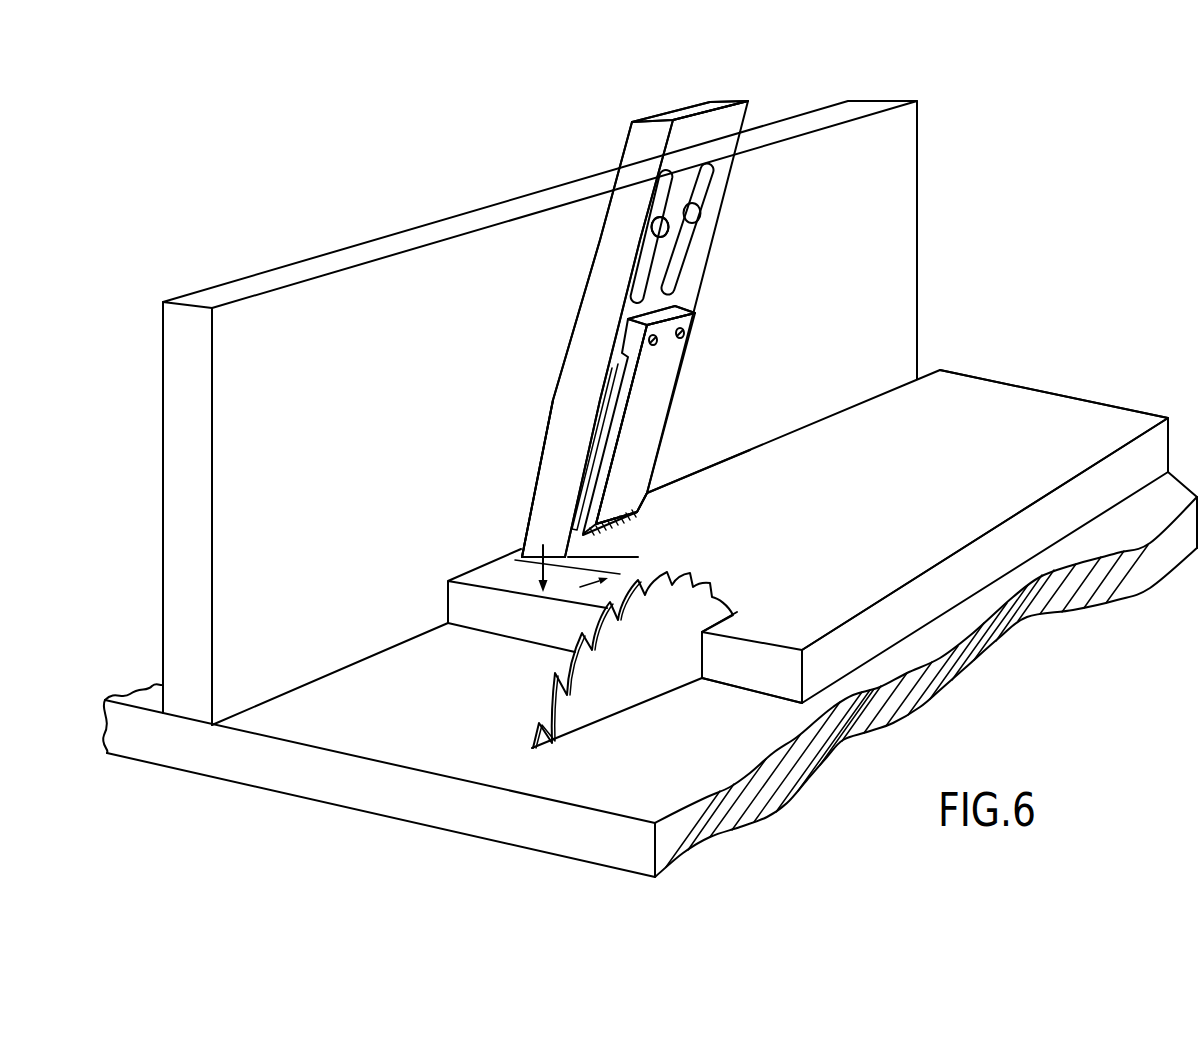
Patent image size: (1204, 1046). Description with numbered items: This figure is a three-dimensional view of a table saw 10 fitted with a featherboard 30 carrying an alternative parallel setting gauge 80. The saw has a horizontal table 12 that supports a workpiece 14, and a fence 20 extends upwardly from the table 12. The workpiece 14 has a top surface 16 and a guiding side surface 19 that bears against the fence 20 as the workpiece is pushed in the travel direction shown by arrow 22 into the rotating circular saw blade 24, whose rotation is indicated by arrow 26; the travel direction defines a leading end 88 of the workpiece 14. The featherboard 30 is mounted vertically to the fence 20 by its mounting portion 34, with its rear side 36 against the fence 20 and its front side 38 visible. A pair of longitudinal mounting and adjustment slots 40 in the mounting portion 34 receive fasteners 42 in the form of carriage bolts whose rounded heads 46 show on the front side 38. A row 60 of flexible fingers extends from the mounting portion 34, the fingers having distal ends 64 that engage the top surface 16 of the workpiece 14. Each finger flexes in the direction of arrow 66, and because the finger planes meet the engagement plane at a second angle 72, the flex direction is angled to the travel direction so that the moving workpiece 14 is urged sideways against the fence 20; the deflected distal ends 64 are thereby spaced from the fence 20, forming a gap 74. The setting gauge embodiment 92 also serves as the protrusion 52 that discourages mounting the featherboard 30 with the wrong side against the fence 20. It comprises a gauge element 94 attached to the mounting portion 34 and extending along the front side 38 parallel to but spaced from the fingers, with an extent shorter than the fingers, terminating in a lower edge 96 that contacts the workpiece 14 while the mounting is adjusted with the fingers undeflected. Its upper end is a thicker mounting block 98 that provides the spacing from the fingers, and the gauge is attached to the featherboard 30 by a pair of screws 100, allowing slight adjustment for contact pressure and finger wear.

The table saw 10 is at (1104, 176).
The table 12 is at (650, 783).
The workpiece 14 is at (1016, 410).
The top surface 16 is at (1076, 404).
The guiding side surface 19 is at (470, 568).
The fence 20 is at (357, 298).
The workpiece travel direction arrow 22 is at (791, 544).
The circular saw blade 24 is at (598, 692).
The blade rotation arrow 26 is at (533, 668).
The featherboard 30 is at (585, 115).
The mounting portion 34 is at (688, 160).
The rear side 36 is at (627, 135).
The front side 38 is at (710, 122).
The mounting and adjustment slots 40 is at (643, 277).
The fasteners 42 is at (690, 208).
The rounded heads 46 is at (658, 232).
The protrusion 52 is at (731, 355).
The row of flexible fingers 60 is at (489, 470).
The distal ends 64 is at (630, 522).
The flex direction arrow 66 is at (540, 565).
The second angle 72 is at (630, 567).
The gap 74 is at (502, 542).
The parallel setting gauge 80 is at (698, 492).
The leading end 88 is at (515, 625).
The parallel setting gauge embodiment 92 is at (662, 404).
The gauge element 94 is at (636, 466).
The lower edge 96 is at (617, 540).
The mounting block 98 is at (668, 317).
The screws 100 is at (657, 346).